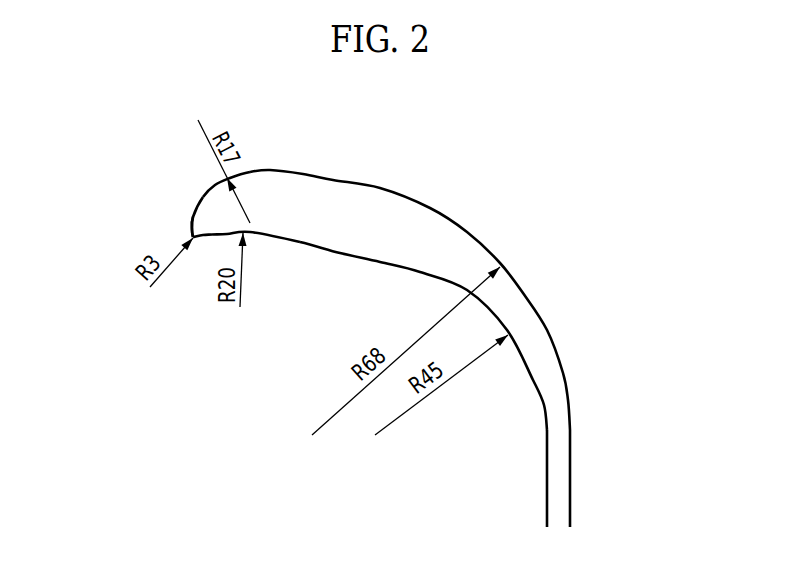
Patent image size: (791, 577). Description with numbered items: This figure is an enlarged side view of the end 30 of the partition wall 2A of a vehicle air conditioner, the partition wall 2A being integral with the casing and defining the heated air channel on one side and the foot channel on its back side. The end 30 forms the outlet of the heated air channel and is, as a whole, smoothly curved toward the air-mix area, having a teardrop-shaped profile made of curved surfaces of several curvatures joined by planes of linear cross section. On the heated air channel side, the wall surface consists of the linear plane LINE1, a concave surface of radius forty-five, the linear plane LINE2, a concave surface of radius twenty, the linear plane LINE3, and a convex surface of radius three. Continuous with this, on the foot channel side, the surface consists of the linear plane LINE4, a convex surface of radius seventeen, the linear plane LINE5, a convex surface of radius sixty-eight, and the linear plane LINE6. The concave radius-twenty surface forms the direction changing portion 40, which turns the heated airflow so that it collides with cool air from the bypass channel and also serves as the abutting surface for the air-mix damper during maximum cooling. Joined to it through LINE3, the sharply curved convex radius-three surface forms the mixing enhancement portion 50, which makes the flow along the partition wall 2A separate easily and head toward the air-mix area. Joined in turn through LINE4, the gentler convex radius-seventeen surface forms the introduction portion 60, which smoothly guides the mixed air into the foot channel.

The partition wall 2A is at (583, 310).
The end of the partition wall 30 is at (403, 220).
The direction changing portion 40 is at (257, 237).
The mixing enhancement portion 50 is at (187, 228).
The introduction portion 60 is at (205, 194).
The linear plane LINE1 is at (546, 485).
The linear plane LINE2 is at (340, 253).
The linear plane LINE3 is at (212, 243).
The linear plane LINE4 is at (193, 222).
The linear plane LINE5 is at (303, 175).
The linear plane LINE6 is at (571, 483).